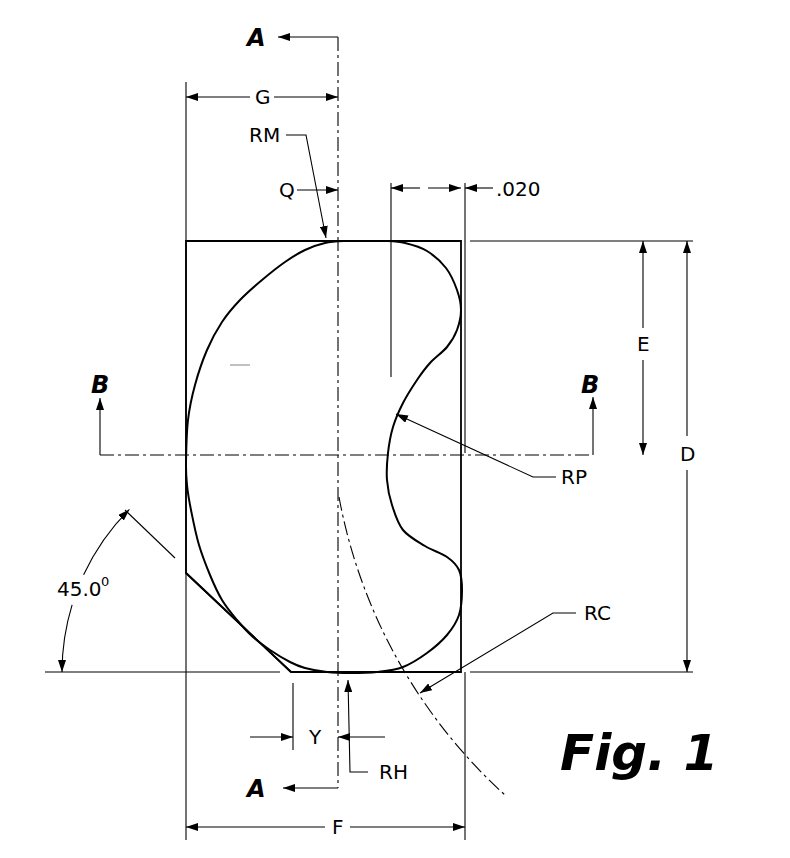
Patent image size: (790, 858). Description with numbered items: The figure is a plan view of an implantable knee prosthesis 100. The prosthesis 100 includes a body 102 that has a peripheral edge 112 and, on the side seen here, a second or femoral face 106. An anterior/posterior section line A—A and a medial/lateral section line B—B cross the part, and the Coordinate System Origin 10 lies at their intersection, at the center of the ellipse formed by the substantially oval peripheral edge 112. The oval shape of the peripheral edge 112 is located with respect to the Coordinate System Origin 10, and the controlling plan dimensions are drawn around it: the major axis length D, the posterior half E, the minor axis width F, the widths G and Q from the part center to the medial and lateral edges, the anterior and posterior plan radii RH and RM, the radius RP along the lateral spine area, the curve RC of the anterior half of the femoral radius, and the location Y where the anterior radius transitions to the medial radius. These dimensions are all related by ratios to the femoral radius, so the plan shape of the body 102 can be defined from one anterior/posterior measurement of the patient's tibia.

The implantable knee prosthesis 100 is at (518, 82).
The body 102 is at (238, 300).
The femoral face 106 is at (230, 365).
The peripheral edge 112 is at (185, 472).
The Coordinate System Origin 10 is at (337, 453).